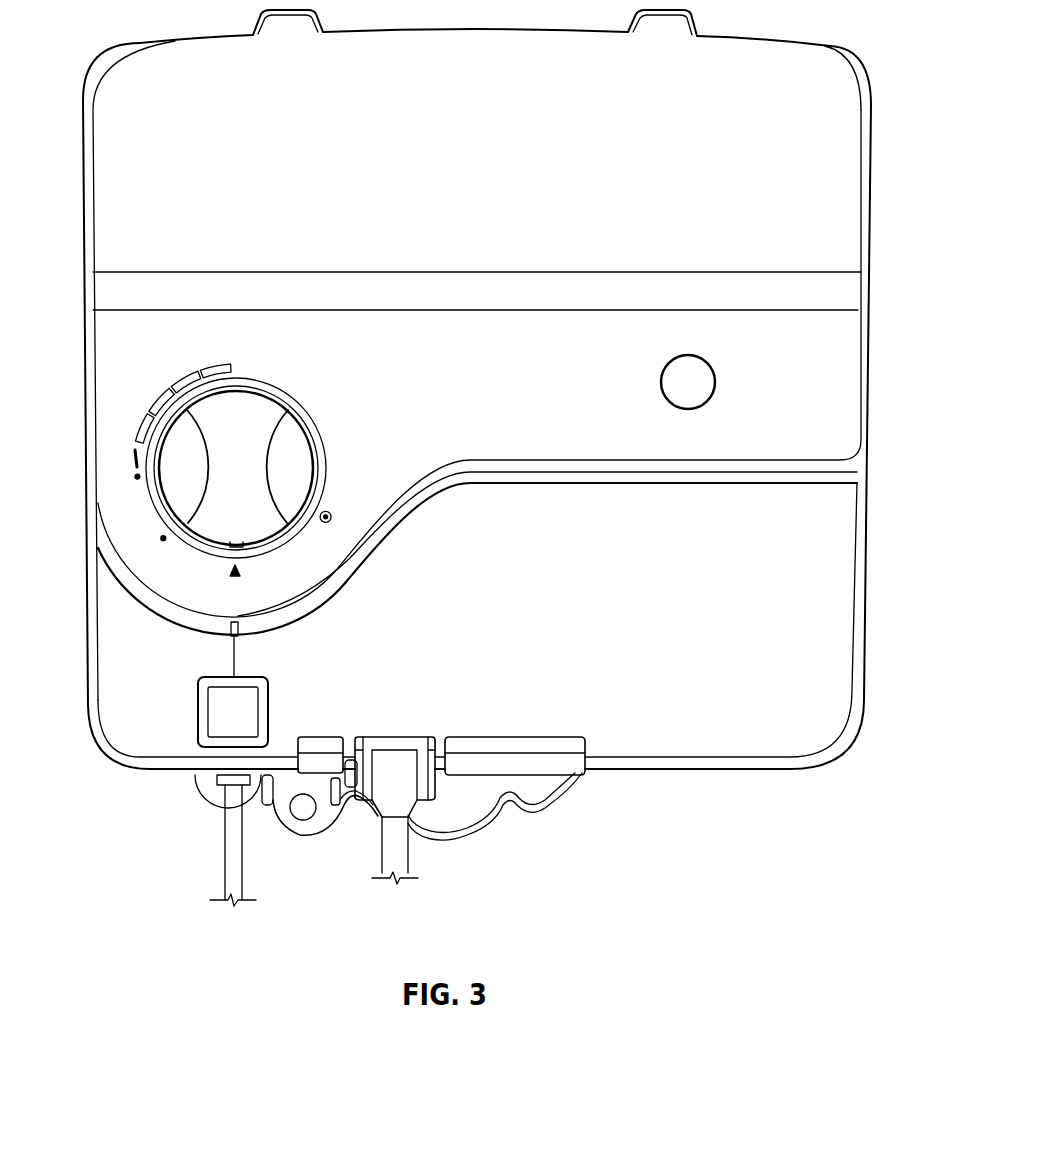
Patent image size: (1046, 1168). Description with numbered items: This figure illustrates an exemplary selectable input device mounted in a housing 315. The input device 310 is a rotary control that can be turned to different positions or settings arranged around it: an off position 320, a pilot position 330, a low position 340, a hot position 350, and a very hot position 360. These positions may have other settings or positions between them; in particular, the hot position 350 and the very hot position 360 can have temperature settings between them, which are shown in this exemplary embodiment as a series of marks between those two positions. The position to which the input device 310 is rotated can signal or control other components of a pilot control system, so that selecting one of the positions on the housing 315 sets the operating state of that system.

The input device 310 is at (292, 447).
The housing 315 is at (752, 40).
The off position 320 is at (340, 520).
The pilot position 330 is at (262, 576).
The low position 340 is at (127, 554).
The hot position 350 is at (115, 477).
The very hot position 360 is at (230, 362).